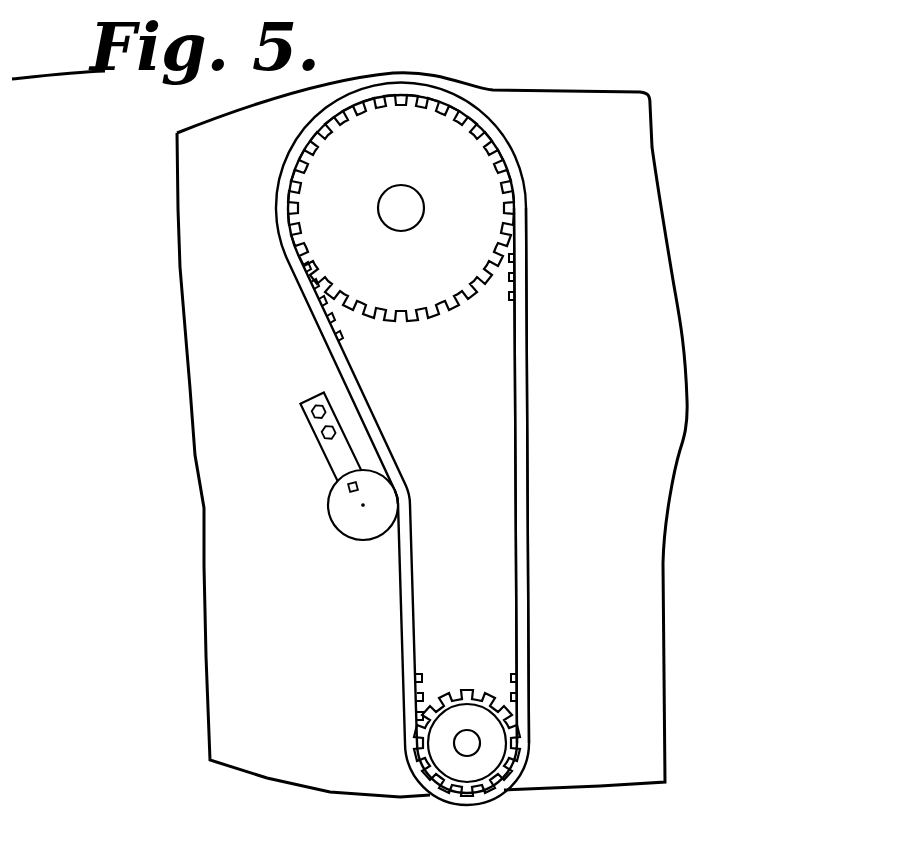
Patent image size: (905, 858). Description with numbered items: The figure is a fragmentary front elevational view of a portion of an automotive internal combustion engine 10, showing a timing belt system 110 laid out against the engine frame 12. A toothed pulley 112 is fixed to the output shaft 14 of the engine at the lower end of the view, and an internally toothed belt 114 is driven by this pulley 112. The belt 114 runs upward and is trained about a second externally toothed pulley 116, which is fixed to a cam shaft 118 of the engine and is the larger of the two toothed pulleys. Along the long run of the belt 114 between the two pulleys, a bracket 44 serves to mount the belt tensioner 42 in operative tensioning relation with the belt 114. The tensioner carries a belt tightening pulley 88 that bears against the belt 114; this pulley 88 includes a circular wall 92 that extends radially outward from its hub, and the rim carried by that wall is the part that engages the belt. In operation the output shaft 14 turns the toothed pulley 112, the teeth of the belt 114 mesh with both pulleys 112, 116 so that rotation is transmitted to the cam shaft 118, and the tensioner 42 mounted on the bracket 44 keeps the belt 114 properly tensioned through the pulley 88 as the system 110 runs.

The automotive internal combustion engine 10 is at (692, 438).
The engine frame 12 is at (217, 377).
The output shaft 14 is at (480, 740).
The belt tensioner 42 is at (333, 528).
The bracket 44 is at (337, 458).
The belt tightening pulley 88 is at (400, 491).
The circular wall 92 is at (363, 527).
The timing belt system 110 is at (532, 362).
The toothed pulley 112 is at (443, 748).
The internally toothed belt 114 is at (525, 580).
The second externally toothed pulley 116 is at (487, 200).
The cam shaft 118 is at (399, 222).